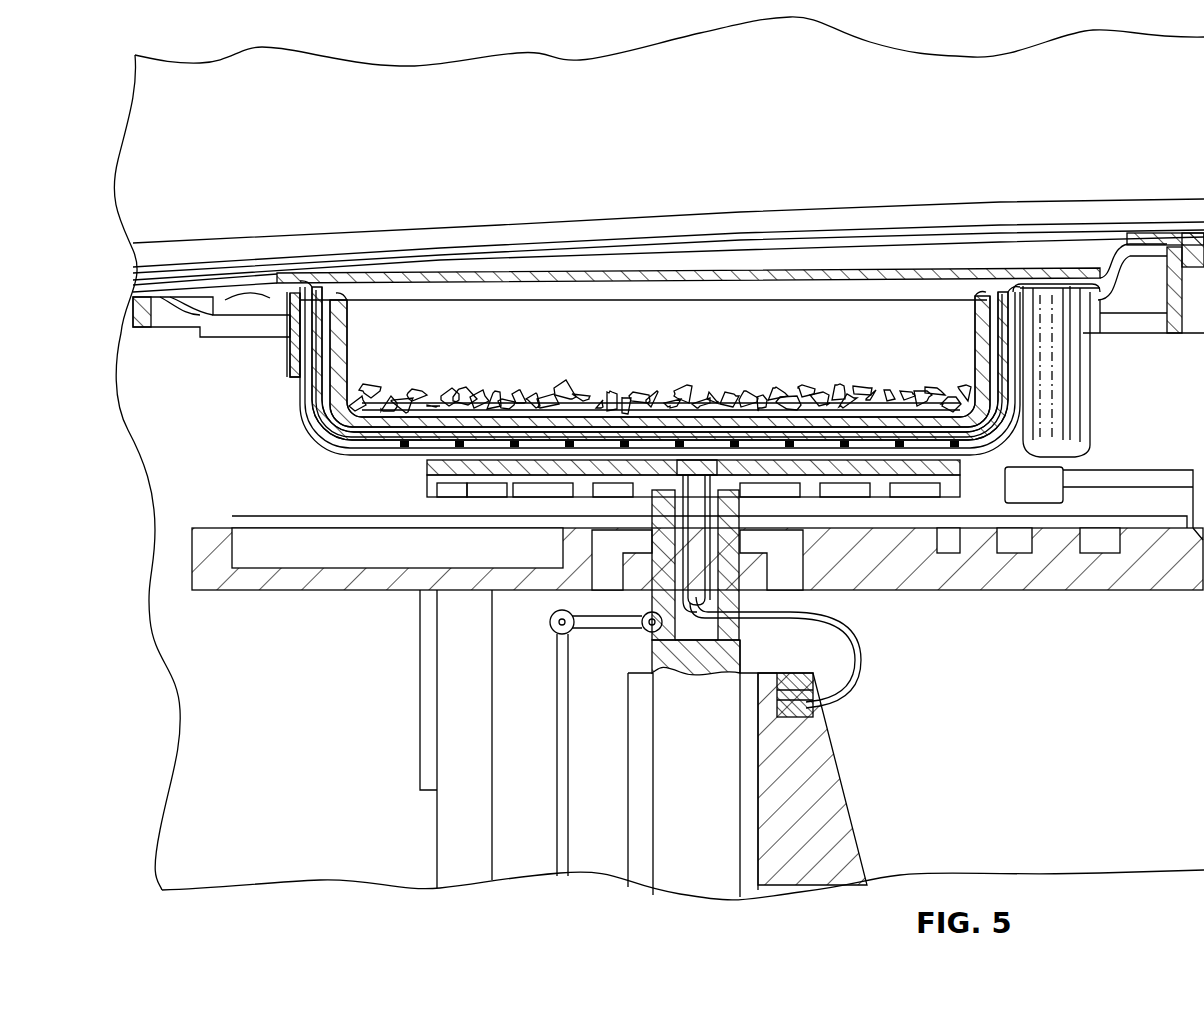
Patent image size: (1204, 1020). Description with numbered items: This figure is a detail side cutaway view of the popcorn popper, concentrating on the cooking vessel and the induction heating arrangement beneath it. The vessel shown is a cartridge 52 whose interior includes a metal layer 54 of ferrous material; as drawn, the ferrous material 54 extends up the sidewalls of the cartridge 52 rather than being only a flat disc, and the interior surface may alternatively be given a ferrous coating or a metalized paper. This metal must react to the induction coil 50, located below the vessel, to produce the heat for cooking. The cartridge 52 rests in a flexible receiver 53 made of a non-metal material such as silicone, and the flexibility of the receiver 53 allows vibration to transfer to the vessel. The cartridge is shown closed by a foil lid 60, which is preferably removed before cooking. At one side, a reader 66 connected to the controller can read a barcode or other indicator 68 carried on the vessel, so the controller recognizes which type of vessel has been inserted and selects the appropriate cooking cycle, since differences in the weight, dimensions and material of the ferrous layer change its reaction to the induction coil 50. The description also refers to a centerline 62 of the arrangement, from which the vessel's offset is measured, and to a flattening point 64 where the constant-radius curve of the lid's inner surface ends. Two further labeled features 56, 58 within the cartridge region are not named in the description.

The induction coil 50 is at (903, 564).
The cartridge 52 is at (332, 300).
The flexible receiver 53 is at (314, 430).
The metal layer 54 is at (344, 298).
The aggregate / stone fill 56 is at (533, 388).
The intermediate layer 58 is at (695, 385).
The foil lid 60 is at (786, 272).
The centerline 62 is at (423, 483).
The flattening point 64 is at (423, 471).
The reader 66 is at (1042, 478).
The indicator 68 is at (998, 310).